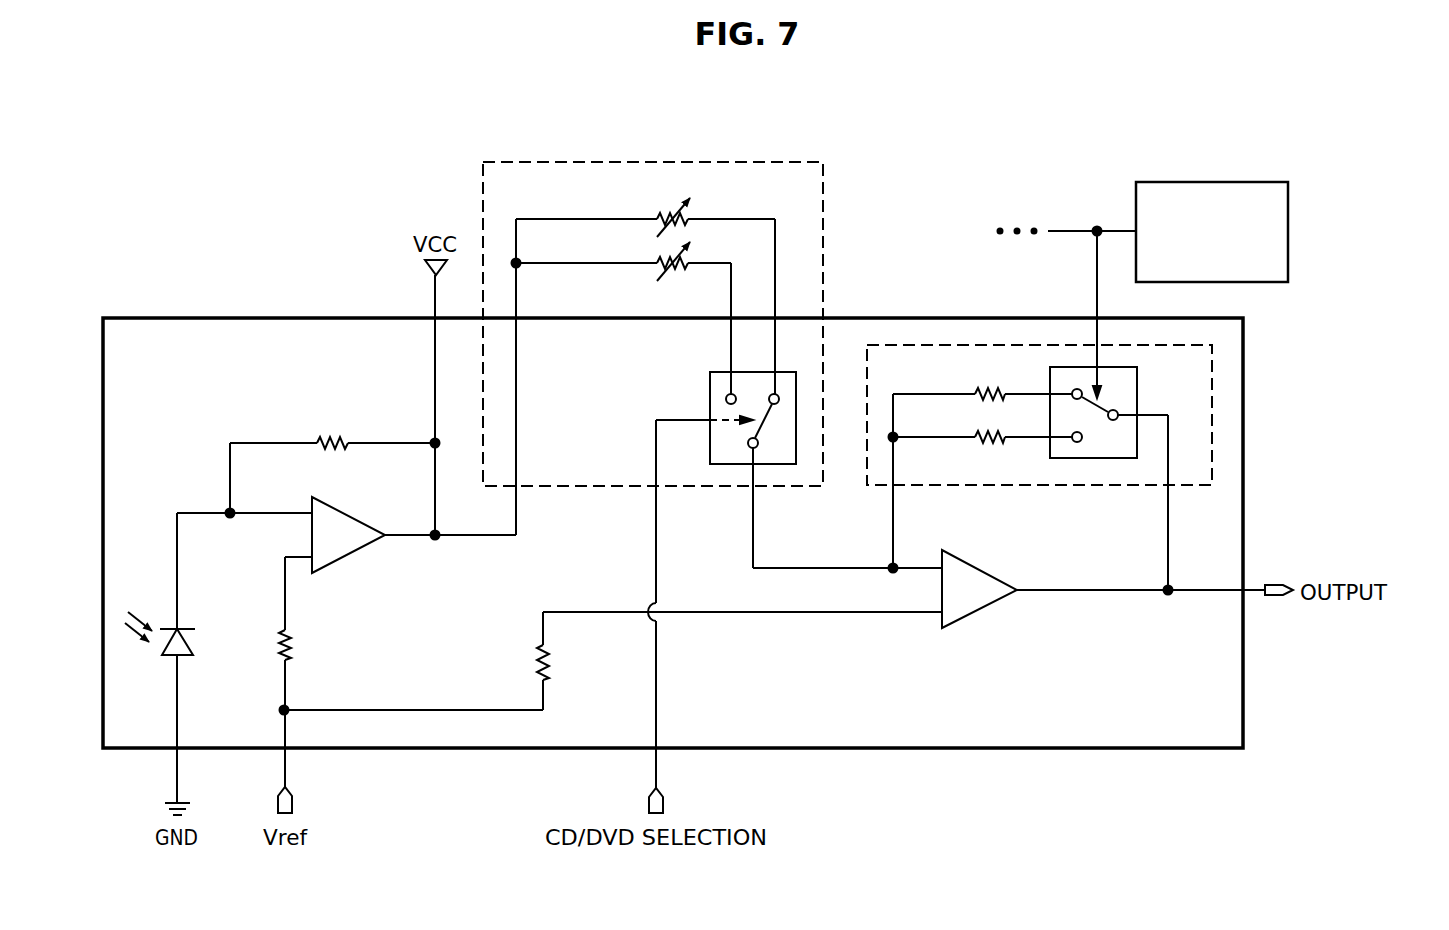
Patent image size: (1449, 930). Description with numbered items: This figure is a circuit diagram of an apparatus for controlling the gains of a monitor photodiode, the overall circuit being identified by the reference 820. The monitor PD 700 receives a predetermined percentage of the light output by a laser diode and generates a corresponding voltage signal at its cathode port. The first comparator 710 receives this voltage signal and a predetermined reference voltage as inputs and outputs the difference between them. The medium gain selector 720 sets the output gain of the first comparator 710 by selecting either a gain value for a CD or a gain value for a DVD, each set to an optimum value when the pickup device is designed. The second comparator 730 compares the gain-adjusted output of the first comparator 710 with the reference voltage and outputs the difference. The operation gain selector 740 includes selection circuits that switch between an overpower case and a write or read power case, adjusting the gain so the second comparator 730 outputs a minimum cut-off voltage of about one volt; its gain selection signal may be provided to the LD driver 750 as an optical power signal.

The monitor PD 700 is at (197, 647).
The first comparator 710 is at (343, 512).
The medium gain selector 720 is at (663, 160).
The second comparator 730 is at (972, 565).
The operation gain selector 740 is at (1070, 487).
The LD driver 750 is at (1215, 180).
The automatic power control circuit 820 is at (1437, 92).